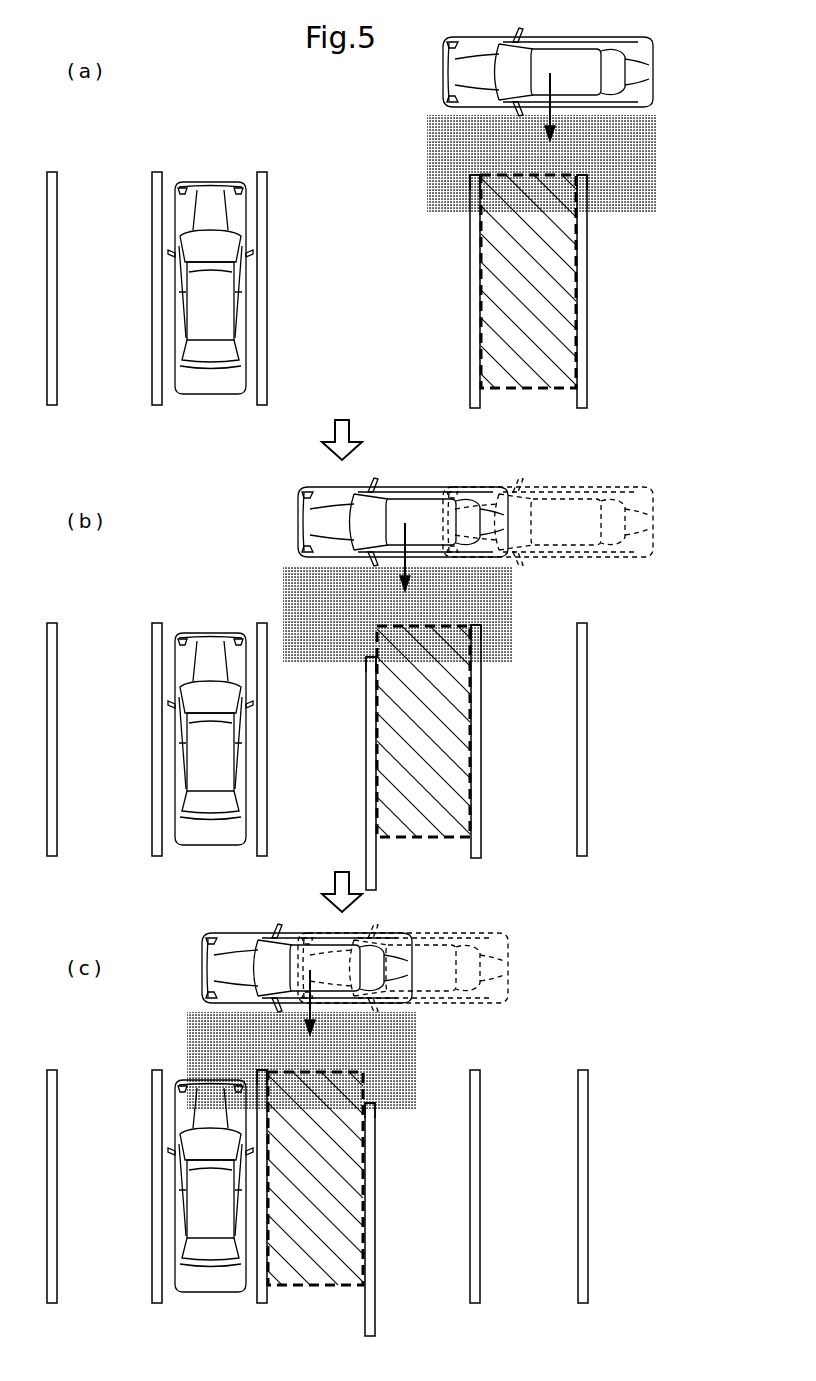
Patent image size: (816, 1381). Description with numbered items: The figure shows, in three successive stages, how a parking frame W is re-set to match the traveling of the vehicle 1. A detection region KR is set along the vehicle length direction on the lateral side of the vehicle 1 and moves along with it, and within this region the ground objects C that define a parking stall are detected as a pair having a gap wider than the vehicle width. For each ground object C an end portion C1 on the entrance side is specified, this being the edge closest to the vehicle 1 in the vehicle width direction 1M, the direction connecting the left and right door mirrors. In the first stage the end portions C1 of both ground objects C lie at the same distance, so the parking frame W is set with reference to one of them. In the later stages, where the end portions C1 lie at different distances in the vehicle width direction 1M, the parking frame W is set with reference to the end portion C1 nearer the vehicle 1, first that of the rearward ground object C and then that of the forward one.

The vehicle 1 is at (656, 62).
The vehicle width direction 1M is at (567, 83).
The detection region KR is at (427, 155).
The end portion C1 is at (473, 176).
The ground object C is at (470, 330).
The parking frame W is at (545, 390).